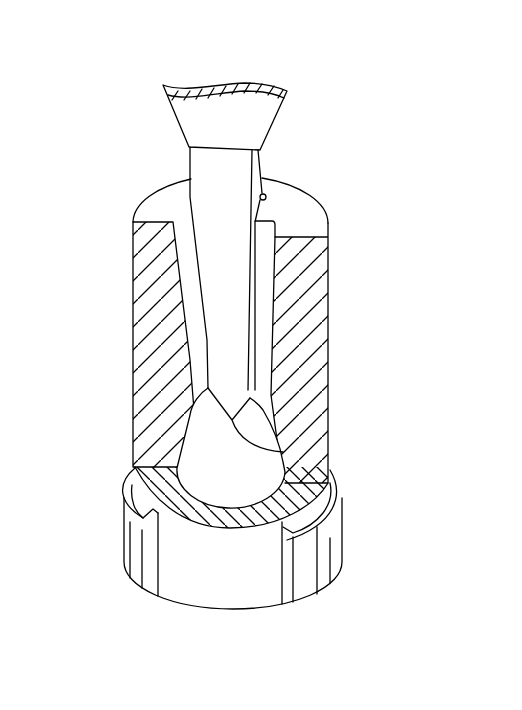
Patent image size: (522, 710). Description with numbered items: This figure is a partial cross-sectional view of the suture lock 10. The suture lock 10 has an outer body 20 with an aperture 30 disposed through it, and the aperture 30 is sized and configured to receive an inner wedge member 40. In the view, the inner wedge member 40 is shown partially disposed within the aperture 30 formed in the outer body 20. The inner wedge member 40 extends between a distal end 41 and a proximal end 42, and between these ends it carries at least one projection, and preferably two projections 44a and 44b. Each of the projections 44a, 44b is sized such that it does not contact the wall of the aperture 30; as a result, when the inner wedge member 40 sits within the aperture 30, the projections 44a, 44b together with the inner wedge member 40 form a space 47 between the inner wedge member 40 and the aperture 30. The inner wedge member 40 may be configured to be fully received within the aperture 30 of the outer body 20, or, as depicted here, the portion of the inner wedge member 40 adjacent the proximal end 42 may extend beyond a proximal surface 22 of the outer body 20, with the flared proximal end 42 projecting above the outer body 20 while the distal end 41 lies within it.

The suture lock 10 is at (86, 198).
The outer body 20 is at (90, 389).
The proximal surface 22 is at (311, 222).
The aperture 30 is at (173, 222).
The inner wedge member 40 is at (291, 57).
The distal end 41 is at (283, 452).
The proximal end 42 is at (206, 108).
The projection 44a is at (190, 186).
The projection 44b is at (263, 178).
The space 47 is at (190, 312).